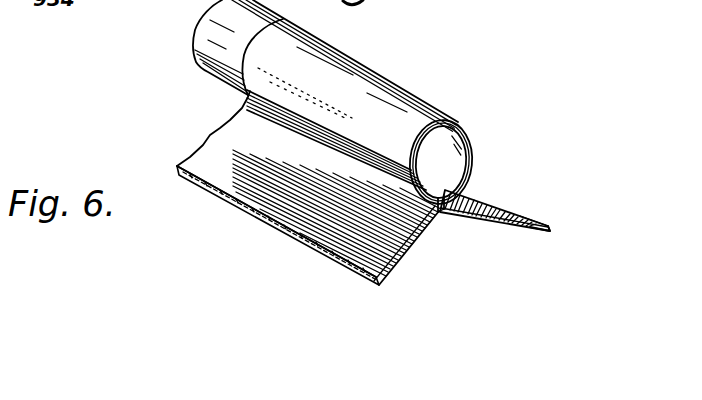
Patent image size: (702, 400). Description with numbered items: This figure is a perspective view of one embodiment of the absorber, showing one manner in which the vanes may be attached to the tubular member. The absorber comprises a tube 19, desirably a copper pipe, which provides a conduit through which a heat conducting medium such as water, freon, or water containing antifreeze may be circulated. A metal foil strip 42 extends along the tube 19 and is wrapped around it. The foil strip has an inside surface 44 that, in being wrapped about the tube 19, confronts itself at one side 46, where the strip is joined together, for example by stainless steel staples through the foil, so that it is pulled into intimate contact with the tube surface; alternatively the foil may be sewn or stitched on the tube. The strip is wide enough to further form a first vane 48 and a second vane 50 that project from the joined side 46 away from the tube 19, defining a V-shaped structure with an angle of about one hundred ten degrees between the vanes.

The tube 19 is at (212, 66).
The metal foil strip 42 is at (528, 198).
The inside surface 44 is at (469, 222).
The one side 46 is at (449, 189).
The first vane 48 is at (537, 230).
The second vane 50 is at (399, 253).